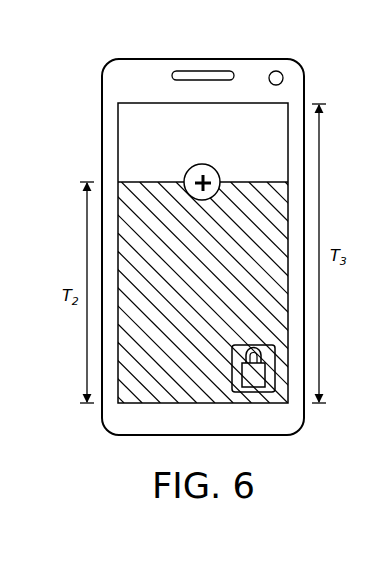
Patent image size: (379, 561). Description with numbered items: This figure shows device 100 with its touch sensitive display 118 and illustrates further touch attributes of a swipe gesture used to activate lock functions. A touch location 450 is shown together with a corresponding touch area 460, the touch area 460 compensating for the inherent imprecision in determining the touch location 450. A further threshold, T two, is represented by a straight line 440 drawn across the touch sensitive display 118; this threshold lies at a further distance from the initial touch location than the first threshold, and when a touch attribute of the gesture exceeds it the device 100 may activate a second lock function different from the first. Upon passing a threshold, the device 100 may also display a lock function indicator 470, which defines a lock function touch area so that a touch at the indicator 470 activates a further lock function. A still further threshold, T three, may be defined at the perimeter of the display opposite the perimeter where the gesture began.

The device 100 is at (109, 44).
The touch sensitive display 118 is at (106, 92).
The straight line 440 is at (137, 182).
The touch location 450 is at (189, 174).
The touch area 460 is at (209, 165).
The lock function indicator 470 is at (272, 386).